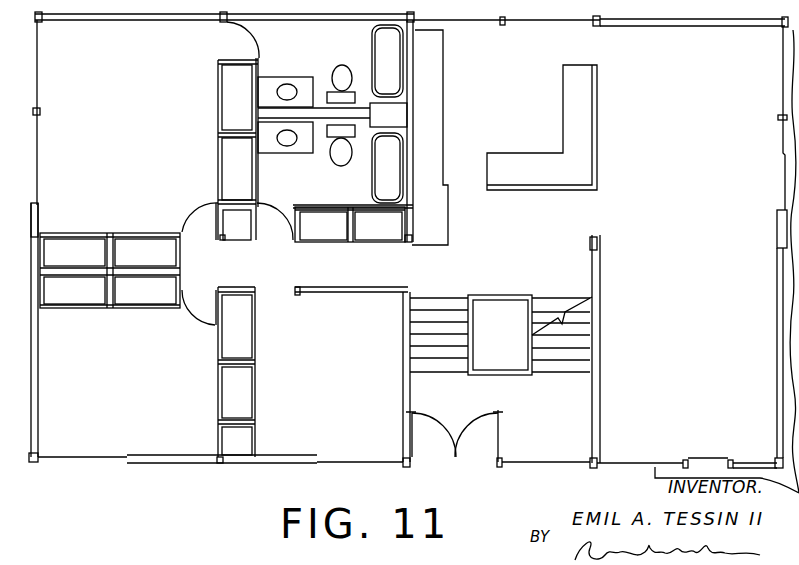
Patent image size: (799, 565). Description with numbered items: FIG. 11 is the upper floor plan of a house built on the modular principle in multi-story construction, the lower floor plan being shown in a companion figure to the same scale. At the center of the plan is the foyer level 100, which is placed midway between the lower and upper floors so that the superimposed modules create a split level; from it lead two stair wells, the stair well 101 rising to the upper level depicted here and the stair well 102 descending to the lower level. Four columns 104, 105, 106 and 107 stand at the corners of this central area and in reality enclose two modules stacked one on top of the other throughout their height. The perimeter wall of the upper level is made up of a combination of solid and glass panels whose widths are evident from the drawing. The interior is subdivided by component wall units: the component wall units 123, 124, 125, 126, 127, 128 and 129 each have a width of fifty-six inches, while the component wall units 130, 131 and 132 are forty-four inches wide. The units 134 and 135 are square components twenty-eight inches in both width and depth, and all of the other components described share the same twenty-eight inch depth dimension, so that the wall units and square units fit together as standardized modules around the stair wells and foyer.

The foyer level 100 is at (525, 453).
The stair well 101 is at (437, 303).
The stair well 102 is at (552, 368).
The column 104 is at (405, 465).
The column 105 is at (408, 247).
The column 106 is at (597, 243).
The column 107 is at (593, 468).
The component wall unit 123 is at (85, 243).
The component wall unit 124 is at (150, 243).
The component wall unit 125 is at (67, 300).
The component wall unit 126 is at (125, 302).
The component wall unit 127 is at (247, 337).
The component wall unit 128 is at (230, 167).
The component wall unit 129 is at (228, 105).
The component wall unit 130 is at (242, 400).
The component wall unit 131 is at (312, 236).
The component wall unit 132 is at (365, 237).
The component unit 134 is at (233, 241).
The component unit 135 is at (240, 442).